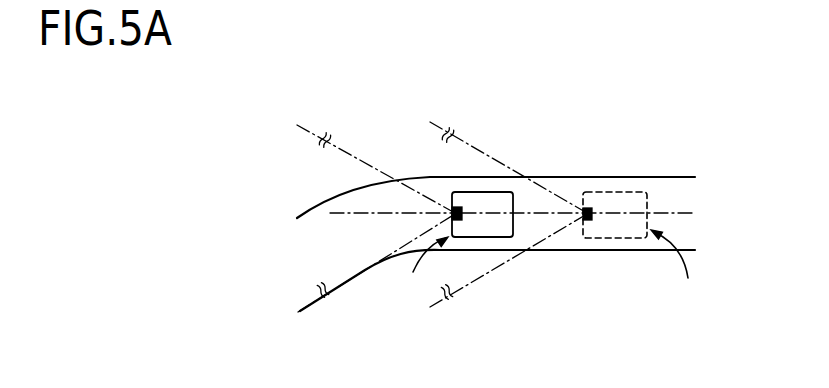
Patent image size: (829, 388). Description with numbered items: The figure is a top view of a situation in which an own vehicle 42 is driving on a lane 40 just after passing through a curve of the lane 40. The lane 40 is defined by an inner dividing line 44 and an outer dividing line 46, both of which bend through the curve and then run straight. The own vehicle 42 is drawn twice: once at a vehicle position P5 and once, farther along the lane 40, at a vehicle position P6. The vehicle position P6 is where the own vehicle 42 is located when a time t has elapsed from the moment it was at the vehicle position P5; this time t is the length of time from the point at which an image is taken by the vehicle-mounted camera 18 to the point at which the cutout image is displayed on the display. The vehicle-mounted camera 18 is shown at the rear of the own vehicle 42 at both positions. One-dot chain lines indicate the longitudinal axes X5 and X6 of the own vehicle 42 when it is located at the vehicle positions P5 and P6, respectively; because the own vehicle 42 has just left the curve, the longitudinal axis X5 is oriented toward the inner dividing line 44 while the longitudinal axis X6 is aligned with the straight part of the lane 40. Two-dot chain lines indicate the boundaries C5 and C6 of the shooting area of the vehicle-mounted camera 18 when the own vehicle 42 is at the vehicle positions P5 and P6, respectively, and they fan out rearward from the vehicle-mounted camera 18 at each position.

The vehicle-mounted camera 18 is at (452, 208).
The lane 40 is at (558, 250).
The own vehicle 42 is at (477, 198).
The inner dividing line 44 is at (377, 267).
The outer dividing line 46 is at (306, 214).
The boundary of shooting area C5 is at (342, 150).
The boundary of shooting area C6 is at (465, 143).
The longitudinal axis X5 is at (342, 213).
The longitudinal axis X6 is at (675, 213).
The vehicle position P5 is at (428, 266).
The vehicle position P6 is at (677, 266).